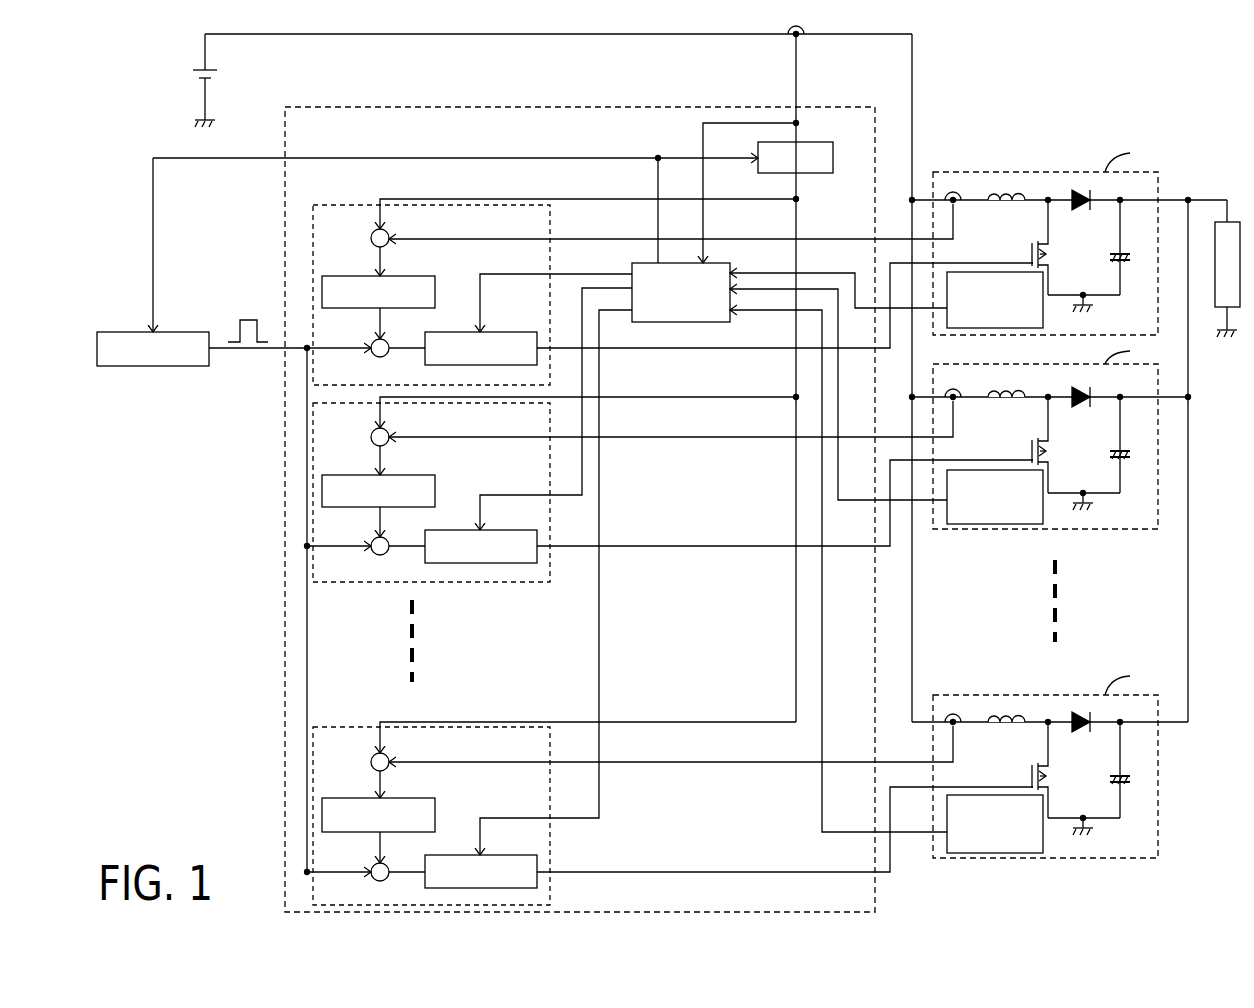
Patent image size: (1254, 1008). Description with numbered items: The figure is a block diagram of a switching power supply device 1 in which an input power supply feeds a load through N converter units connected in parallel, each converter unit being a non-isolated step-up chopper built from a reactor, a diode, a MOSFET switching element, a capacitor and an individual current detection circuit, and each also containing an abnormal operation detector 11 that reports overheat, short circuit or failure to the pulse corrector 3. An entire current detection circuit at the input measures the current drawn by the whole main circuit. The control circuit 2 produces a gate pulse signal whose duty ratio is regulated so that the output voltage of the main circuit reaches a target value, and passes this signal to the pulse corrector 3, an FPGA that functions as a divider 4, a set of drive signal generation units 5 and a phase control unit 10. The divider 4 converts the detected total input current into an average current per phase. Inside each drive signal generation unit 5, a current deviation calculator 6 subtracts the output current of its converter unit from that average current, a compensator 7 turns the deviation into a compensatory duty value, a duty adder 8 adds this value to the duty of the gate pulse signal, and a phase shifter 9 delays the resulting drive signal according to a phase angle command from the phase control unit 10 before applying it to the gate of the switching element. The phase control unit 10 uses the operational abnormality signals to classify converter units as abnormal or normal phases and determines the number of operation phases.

The switching power supply device 1 is at (992, 58).
The control circuit 2 is at (183, 331).
The pulse corrector 3 is at (722, 106).
The divider 4 is at (822, 143).
The drive signal generation unit 5 is at (330, 197).
The current deviation calculator 6 is at (392, 234).
The compensator 7 is at (425, 275).
The duty adder 8 is at (388, 355).
The phase shifter 9 is at (500, 331).
The phase control unit 10 is at (734, 263).
The abnormal operation detector 11 is at (1010, 329).